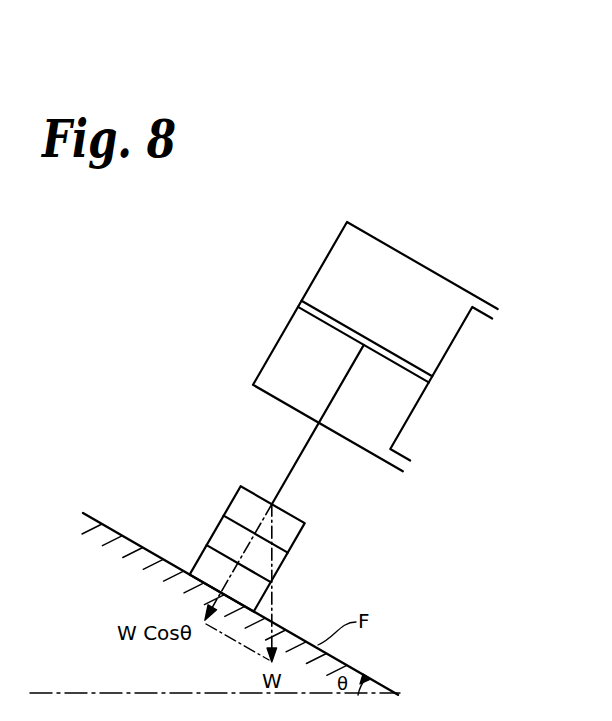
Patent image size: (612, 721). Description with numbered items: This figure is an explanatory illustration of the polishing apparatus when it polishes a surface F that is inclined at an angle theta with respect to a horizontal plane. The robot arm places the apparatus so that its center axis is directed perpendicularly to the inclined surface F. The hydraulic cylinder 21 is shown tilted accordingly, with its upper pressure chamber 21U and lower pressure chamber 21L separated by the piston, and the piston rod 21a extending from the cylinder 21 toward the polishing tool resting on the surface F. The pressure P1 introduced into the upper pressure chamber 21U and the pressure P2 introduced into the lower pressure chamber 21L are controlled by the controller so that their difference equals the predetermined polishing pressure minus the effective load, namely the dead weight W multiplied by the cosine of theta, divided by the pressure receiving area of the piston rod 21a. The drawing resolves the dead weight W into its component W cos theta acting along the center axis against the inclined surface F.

The hydraulic cylinder 21 is at (425, 266).
The upper pressure chamber 21U is at (337, 252).
The lower pressure chamber 21L is at (277, 362).
The piston rod 21a is at (292, 462).